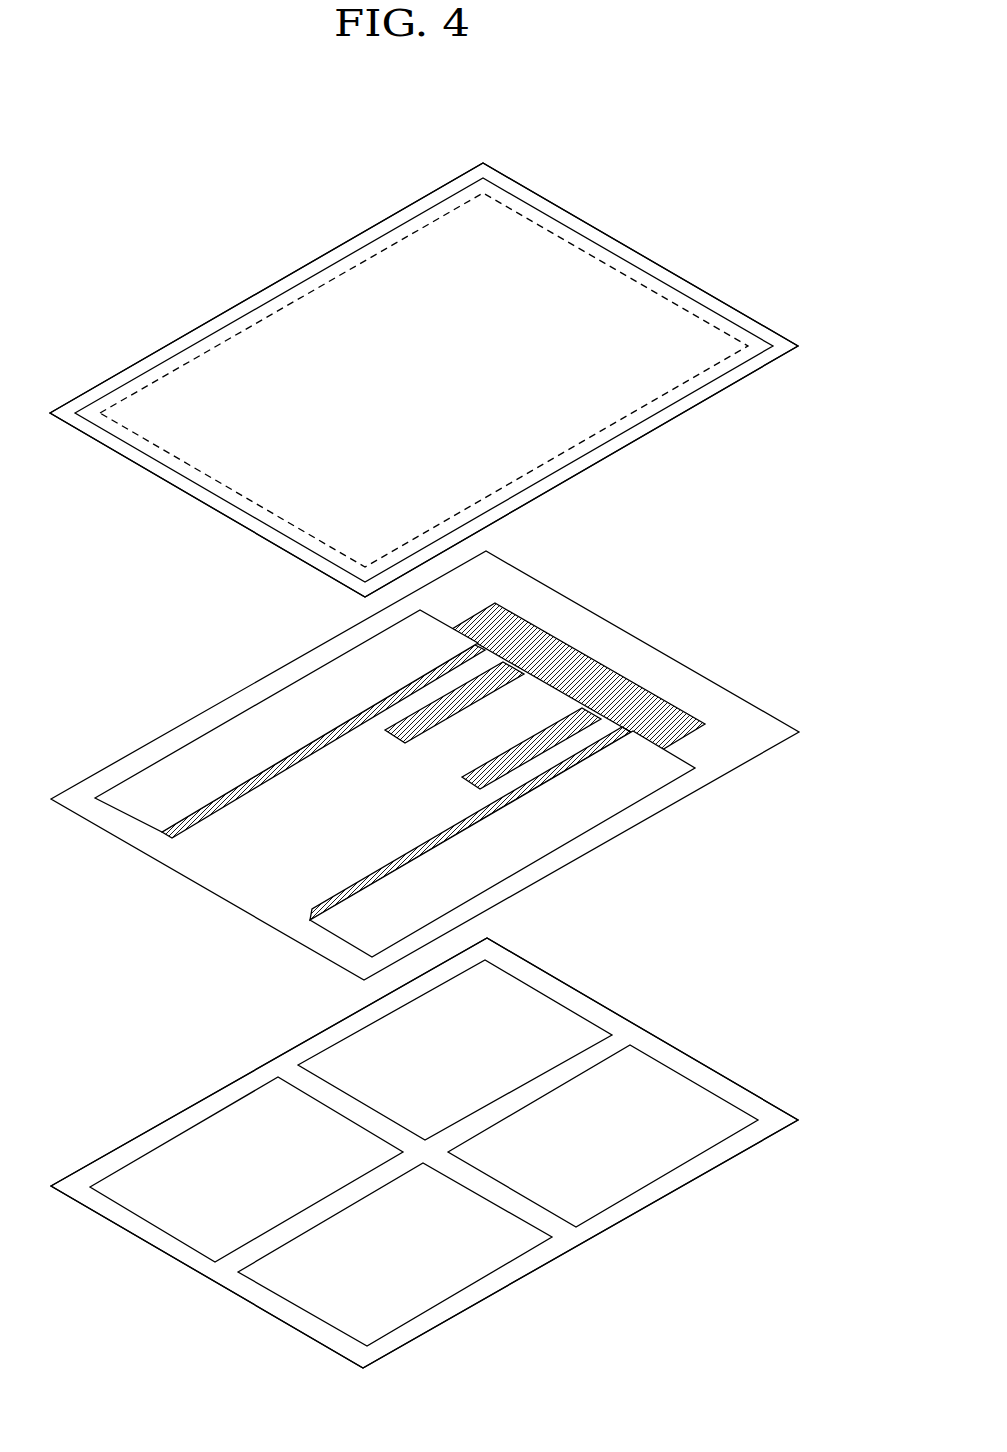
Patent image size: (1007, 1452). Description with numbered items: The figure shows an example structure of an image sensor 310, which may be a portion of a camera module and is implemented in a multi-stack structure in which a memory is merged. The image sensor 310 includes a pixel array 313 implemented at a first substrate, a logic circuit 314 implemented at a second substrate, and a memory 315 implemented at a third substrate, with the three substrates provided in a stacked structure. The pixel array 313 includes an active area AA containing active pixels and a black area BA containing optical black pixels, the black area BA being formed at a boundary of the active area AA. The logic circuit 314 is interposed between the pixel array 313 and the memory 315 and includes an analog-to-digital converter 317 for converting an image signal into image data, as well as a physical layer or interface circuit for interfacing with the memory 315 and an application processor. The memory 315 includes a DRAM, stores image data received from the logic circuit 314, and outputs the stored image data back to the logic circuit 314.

The image sensor 310 is at (772, 104).
The pixel array 313 is at (587, 222).
The logic circuit 314 is at (637, 638).
The memory 315 is at (637, 1023).
The analog-to-digital converter 317 is at (203, 730).
The black area BA is at (458, 198).
The active area AA is at (633, 300).